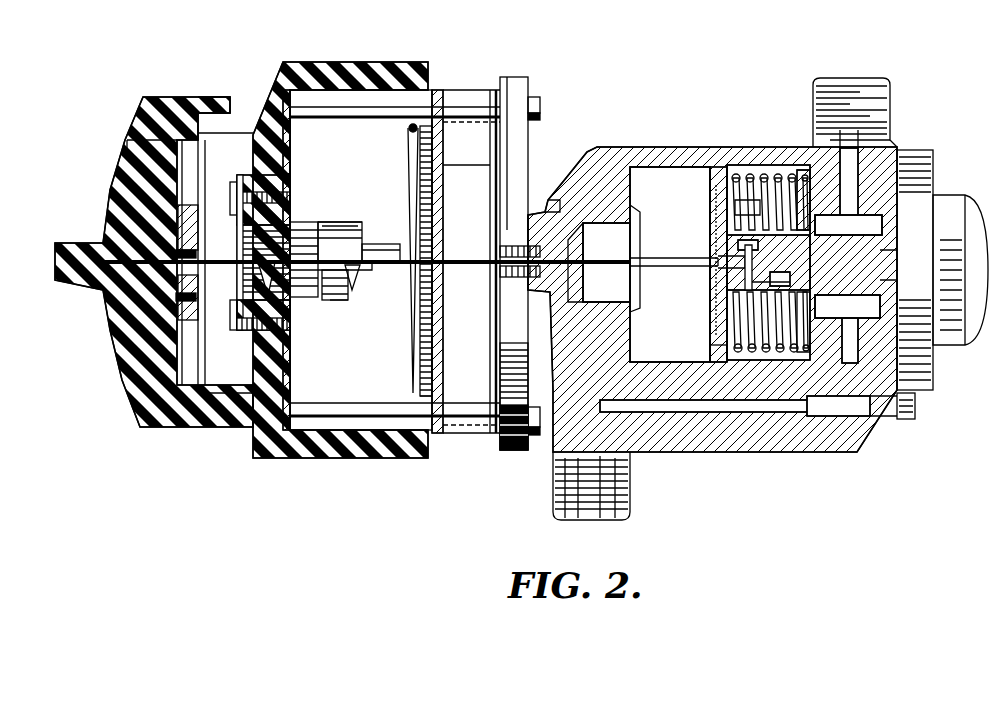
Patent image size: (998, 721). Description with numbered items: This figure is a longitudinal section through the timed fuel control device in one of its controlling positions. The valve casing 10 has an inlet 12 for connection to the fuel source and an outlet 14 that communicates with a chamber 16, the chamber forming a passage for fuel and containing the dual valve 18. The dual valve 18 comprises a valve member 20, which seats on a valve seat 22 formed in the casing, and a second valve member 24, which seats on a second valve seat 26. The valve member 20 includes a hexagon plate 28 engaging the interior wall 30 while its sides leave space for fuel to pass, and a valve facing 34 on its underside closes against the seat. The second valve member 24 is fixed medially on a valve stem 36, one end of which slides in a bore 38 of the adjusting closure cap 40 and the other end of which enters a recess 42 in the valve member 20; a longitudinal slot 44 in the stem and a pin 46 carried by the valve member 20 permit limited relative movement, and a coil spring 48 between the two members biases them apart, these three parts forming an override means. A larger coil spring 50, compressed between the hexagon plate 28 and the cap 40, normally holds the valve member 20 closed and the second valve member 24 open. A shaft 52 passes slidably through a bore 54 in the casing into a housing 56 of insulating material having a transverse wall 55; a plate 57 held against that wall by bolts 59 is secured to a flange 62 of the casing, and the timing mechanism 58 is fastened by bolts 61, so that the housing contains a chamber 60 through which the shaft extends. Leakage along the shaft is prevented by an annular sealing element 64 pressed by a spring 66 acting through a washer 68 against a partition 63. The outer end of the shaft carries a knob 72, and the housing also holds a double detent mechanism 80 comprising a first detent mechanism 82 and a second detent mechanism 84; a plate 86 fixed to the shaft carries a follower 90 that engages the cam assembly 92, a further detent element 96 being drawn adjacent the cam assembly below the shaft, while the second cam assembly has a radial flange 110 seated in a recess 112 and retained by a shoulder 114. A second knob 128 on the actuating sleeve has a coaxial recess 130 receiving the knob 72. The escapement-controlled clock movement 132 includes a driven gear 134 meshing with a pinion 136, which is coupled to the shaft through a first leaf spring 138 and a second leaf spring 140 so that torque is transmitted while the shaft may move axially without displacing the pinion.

The valve casing 10 is at (718, 146).
The inlet 12 is at (860, 78).
The outlet 14 is at (614, 520).
The chamber 16 is at (670, 197).
The dual valve 18 is at (745, 176).
The valve member 20 is at (716, 350).
The valve seat 22 is at (641, 212).
The second valve member 24 is at (812, 311).
The second valve seat 26 is at (812, 220).
The hexagon plate 28 is at (718, 322).
The interior wall 30 is at (676, 350).
The valve facing 34 is at (715, 300).
The valve stem 36 is at (882, 270).
The bore 38 is at (897, 240).
The adjusting closure cap 40 is at (934, 176).
The recess 42 is at (752, 268).
The longitudinal slot 44 is at (745, 247).
The pin 46 is at (744, 282).
The coil spring 48 is at (740, 203).
The coil spring 50 is at (788, 175).
The shaft 52 is at (688, 262).
The bore 54 is at (576, 266).
The transverse wall 55 is at (252, 158).
The housing 56 is at (378, 64).
The plate 57 is at (288, 360).
The timing mechanism 58 is at (503, 140).
The bolts 59 is at (236, 193).
The chamber 60 is at (360, 150).
The bolts 61 is at (460, 99).
The flange 62 is at (528, 85).
The partition 63 is at (500, 292).
The annular sealing element 64 is at (580, 243).
The spring 66 is at (505, 247).
The washer 68 is at (544, 214).
The knob 72 is at (113, 176).
The double detent mechanism 80 is at (371, 208).
The first detent mechanism 82 is at (343, 317).
The second detent mechanism 84 is at (285, 236).
The plate 86 is at (392, 221).
The follower 90 is at (398, 247).
The cam assembly 92 is at (341, 302).
The finger 96 is at (353, 270).
The radial flange 110 is at (240, 283).
The recess 112 is at (288, 300).
The shoulder 114 is at (240, 236).
The knob 128 is at (204, 97).
The coaxial recess 130 is at (126, 141).
The clock movement 132 is at (478, 189).
The driven gear 134 is at (433, 146).
The pinion 136 is at (433, 216).
The first leaf spring 138 is at (409, 130).
The second leaf spring 140 is at (409, 166).